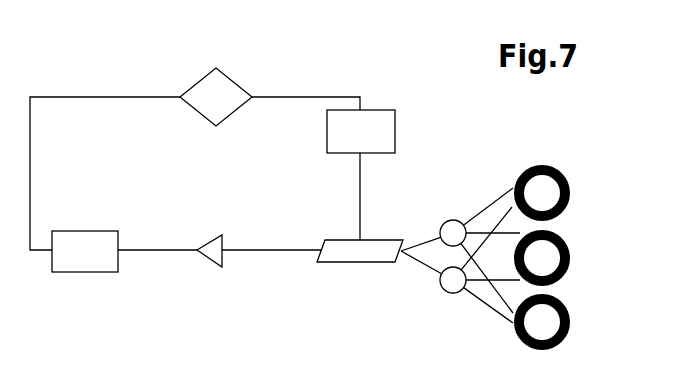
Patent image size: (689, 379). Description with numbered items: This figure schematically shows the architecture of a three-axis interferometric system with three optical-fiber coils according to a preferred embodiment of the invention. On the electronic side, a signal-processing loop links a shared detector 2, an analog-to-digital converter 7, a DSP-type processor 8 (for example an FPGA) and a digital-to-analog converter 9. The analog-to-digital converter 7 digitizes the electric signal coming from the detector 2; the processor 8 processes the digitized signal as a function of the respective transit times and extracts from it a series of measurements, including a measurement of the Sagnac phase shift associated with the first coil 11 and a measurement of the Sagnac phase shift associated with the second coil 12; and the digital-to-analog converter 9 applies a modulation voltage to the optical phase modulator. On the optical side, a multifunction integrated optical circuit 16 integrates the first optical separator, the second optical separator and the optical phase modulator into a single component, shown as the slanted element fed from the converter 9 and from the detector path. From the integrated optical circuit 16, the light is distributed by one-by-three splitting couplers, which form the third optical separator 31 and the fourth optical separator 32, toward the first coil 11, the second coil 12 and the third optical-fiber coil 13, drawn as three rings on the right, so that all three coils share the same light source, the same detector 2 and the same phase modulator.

The detector 2 is at (200, 257).
The analog-to-digital converter 7 is at (80, 231).
The processor of the DSP type 8 is at (230, 72).
The digital-to-analog converter 9 is at (376, 110).
The first coil 11 is at (571, 192).
The second coil 12 is at (571, 261).
The third optical-fiber coil 13 is at (571, 327).
The multifunction integrated optical circuit 16 is at (340, 240).
The third optical separator 31 is at (445, 222).
The second nozzle 32 is at (443, 290).